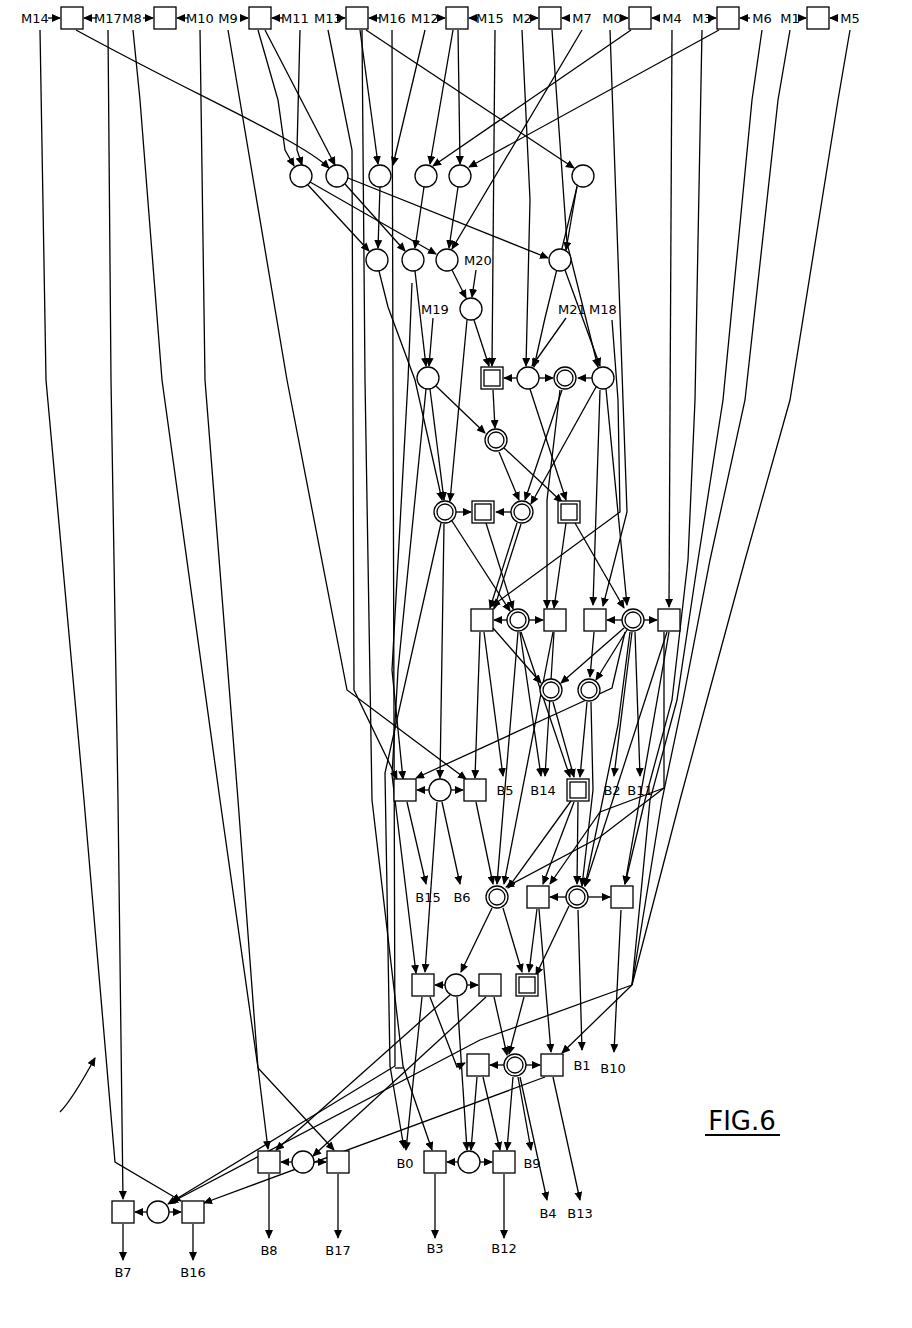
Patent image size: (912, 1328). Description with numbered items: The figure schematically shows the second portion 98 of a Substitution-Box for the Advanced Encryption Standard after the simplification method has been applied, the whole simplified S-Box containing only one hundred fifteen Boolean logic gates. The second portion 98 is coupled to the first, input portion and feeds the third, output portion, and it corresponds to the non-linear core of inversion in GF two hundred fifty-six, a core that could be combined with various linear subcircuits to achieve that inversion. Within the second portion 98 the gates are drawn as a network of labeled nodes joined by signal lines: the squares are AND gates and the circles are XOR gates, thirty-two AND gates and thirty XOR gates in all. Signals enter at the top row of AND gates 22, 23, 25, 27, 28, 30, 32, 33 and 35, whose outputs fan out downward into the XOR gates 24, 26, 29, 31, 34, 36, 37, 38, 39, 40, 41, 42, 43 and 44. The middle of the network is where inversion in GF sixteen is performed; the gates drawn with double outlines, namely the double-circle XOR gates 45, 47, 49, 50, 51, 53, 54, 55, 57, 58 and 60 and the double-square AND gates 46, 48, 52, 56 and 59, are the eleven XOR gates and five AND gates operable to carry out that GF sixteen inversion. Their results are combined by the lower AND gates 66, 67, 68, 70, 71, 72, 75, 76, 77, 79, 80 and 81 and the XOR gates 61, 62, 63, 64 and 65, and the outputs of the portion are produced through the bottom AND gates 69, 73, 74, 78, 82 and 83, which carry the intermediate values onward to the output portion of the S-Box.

The second portion 98 is at (39, 1121).
The XOR node 22 is at (457, 18).
The XOR node 23 is at (728, 18).
The node 24 is at (460, 176).
The XOR node 25 is at (640, 18).
The node 26 is at (426, 176).
The XOR node 27 is at (357, 18).
The XOR node 28 is at (818, 18).
The node 29 is at (583, 176).
The XOR node 30 is at (550, 18).
The node 31 is at (380, 176).
The XOR node 32 is at (260, 18).
The XOR node 33 is at (72, 18).
The node 34 is at (337, 176).
The XOR node 35 is at (165, 18).
The node 36 is at (301, 176).
The node 37 is at (447, 260).
The node 38 is at (413, 260).
The node 39 is at (560, 260).
The node 40 is at (377, 260).
The node 41 is at (471, 309).
The node 42 is at (428, 378).
The node 43 is at (528, 378).
The node 44 is at (603, 378).
The node 45 is at (445, 512).
The node 46 is at (492, 378).
The node 47 is at (522, 512).
The node 48 is at (483, 512).
The node 49 is at (518, 620).
The node 50 is at (565, 378).
The node 51 is at (496, 440).
The node 52 is at (569, 512).
The node 53 is at (633, 620).
The node 54 is at (589, 690).
The node 55 is at (551, 690).
The node 56 is at (578, 790).
The node 57 is at (577, 897).
The node 58 is at (497, 897).
The node 59 is at (527, 985).
The node 60 is at (515, 1065).
The node 61 is at (303, 1162).
The node 62 is at (440, 790).
The node 63 is at (469, 1162).
The node 64 is at (456, 985).
The node 65 is at (158, 1212).
The node 66 is at (423, 985).
The node 67 is at (538, 897).
The node 68 is at (595, 620).
The node 69 is at (435, 1162).
The node 70 is at (478, 1065).
The node 71 is at (482, 620).
The node 72 is at (475, 790).
The node 73 is at (123, 1212).
The node 74 is at (269, 1162).
The node 75 is at (490, 985).
The node 76 is at (622, 897).
The node 77 is at (669, 620).
The node 78 is at (504, 1162).
The node 79 is at (552, 1065).
The node 80 is at (555, 620).
The node 81 is at (405, 790).
The node 82 is at (193, 1212).
The node 83 is at (338, 1162).